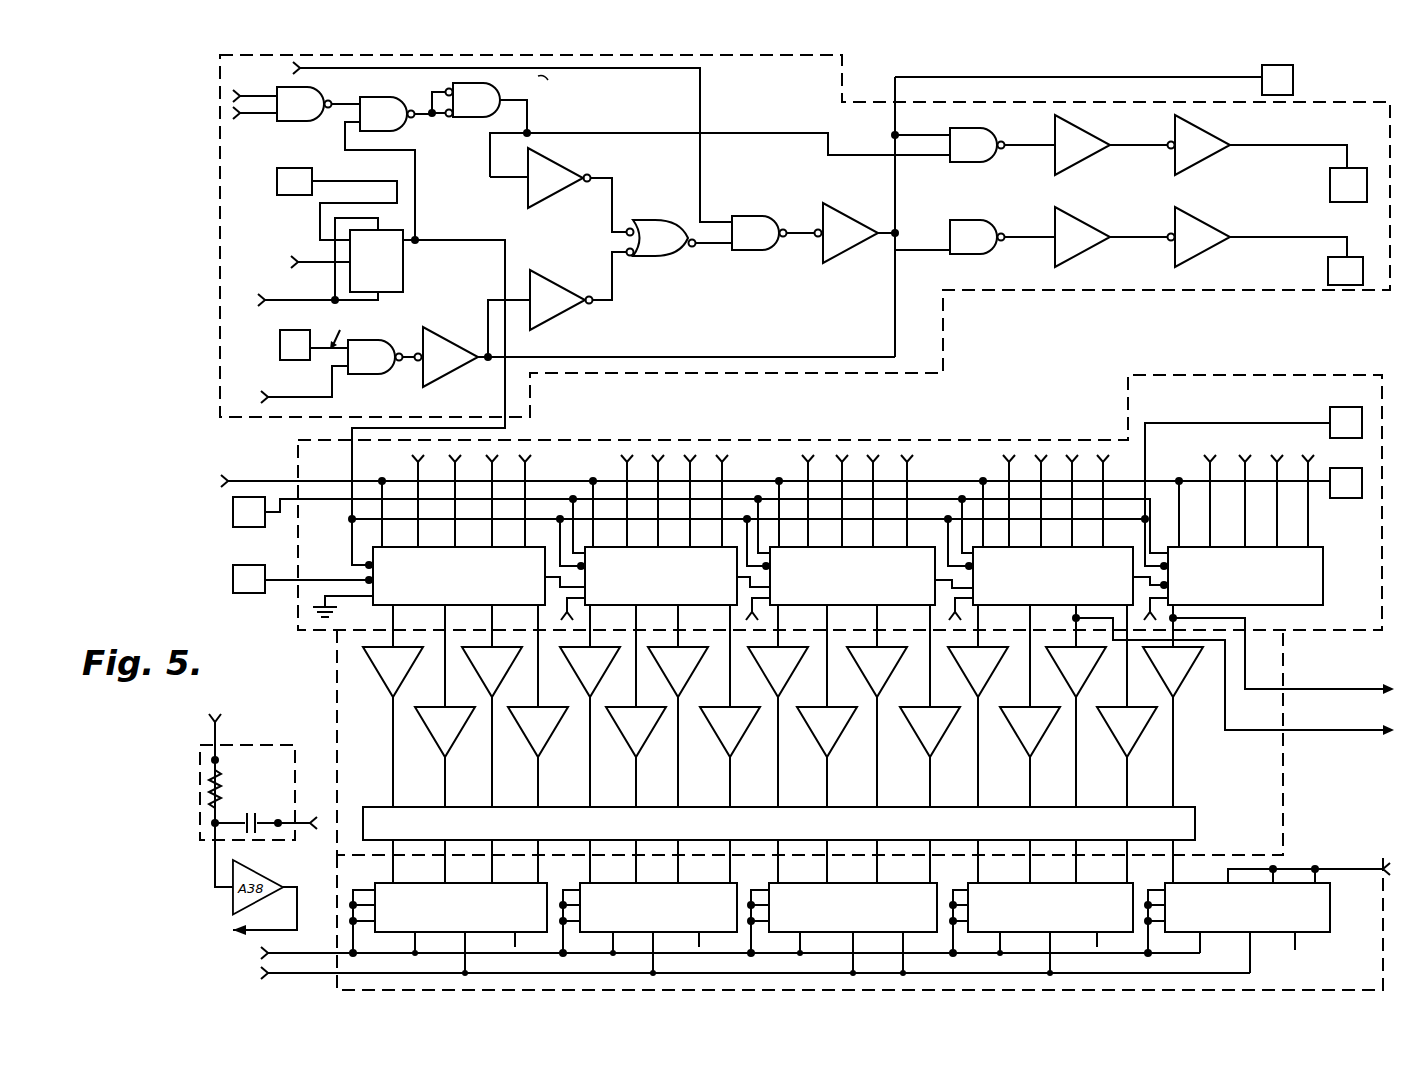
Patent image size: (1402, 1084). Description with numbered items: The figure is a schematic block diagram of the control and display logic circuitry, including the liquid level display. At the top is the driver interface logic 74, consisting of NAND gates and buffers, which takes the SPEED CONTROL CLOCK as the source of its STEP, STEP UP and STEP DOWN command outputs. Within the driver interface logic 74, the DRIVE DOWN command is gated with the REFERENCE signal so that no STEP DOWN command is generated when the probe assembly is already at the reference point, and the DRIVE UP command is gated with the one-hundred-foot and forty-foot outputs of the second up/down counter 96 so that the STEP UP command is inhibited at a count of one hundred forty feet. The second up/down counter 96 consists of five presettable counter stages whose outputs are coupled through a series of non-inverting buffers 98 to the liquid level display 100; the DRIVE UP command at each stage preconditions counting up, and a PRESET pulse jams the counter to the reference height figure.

The driver interface logic 74 is at (530, 387).
The up/down counter No. 2 96 is at (588, 431).
The non-inverting buffers 98 is at (1283, 783).
The liquid level display 100 is at (1362, 857).